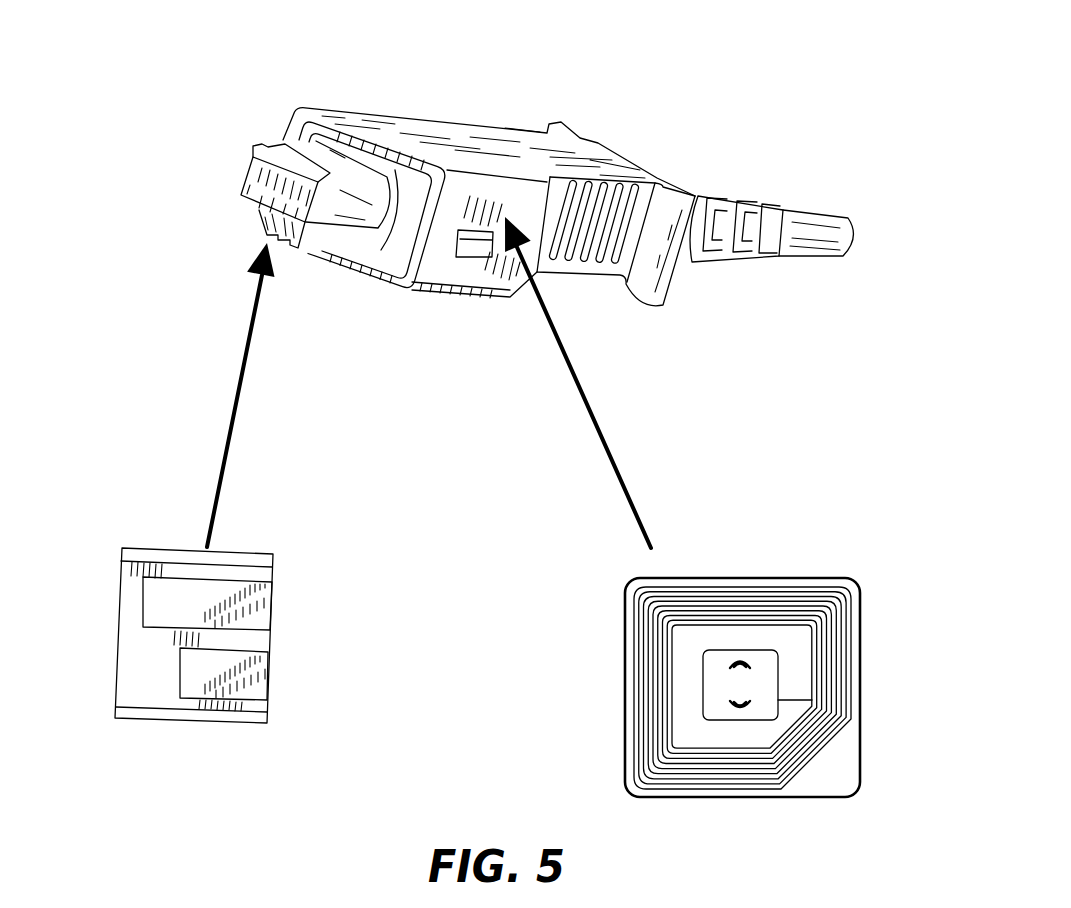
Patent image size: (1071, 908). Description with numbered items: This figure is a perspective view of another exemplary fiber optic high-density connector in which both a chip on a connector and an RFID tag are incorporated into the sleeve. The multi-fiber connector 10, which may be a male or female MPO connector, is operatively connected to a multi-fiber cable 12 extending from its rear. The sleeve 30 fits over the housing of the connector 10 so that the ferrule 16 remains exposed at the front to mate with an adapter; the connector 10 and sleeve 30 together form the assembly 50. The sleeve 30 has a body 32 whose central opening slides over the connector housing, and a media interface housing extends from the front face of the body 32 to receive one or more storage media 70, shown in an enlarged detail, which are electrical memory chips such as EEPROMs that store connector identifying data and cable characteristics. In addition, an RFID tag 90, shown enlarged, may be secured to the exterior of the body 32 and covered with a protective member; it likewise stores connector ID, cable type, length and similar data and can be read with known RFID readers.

The multi-fiber connector 10 is at (271, 200).
The multi-fiber cable 12 is at (822, 222).
The ferrule 16 is at (245, 168).
The sleeve 30 is at (499, 115).
The body 32 is at (437, 293).
The assembly 50 is at (646, 68).
The storage media 70 is at (133, 594).
The RFID tag 90 is at (870, 632).